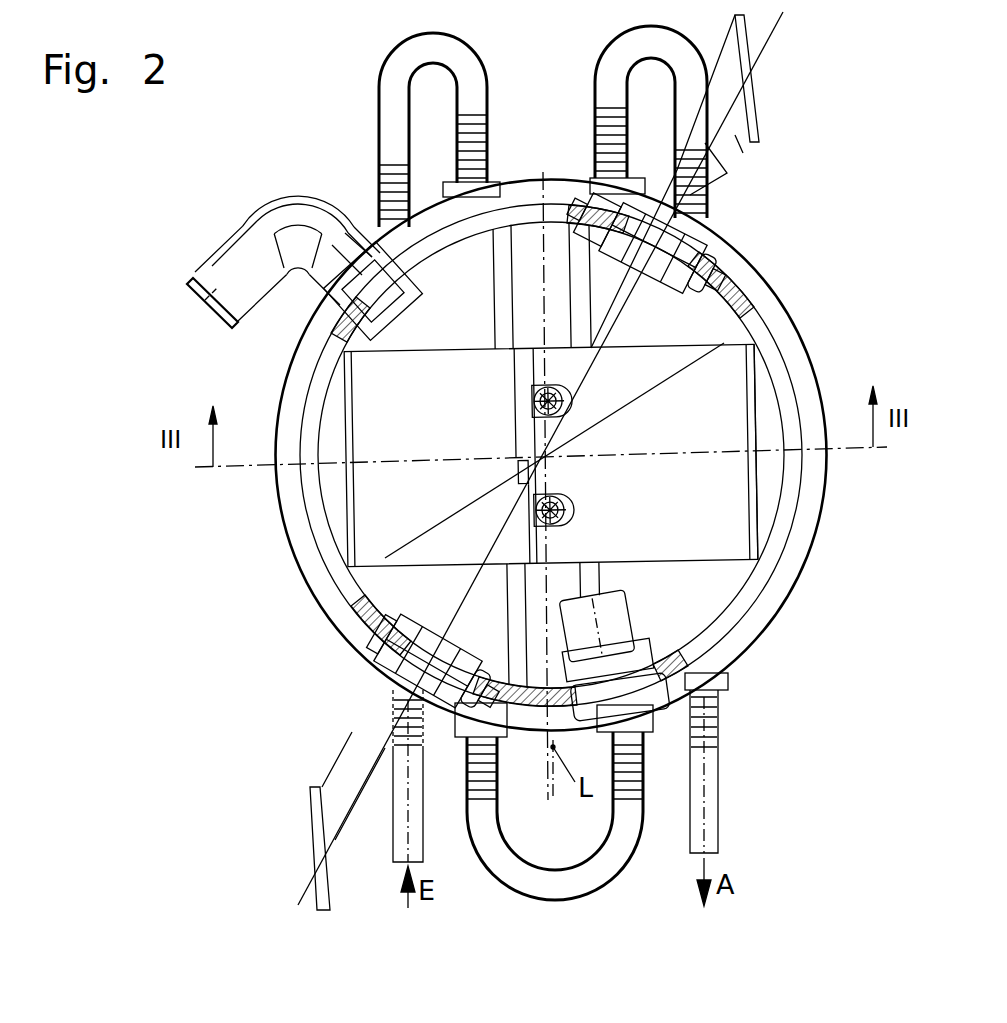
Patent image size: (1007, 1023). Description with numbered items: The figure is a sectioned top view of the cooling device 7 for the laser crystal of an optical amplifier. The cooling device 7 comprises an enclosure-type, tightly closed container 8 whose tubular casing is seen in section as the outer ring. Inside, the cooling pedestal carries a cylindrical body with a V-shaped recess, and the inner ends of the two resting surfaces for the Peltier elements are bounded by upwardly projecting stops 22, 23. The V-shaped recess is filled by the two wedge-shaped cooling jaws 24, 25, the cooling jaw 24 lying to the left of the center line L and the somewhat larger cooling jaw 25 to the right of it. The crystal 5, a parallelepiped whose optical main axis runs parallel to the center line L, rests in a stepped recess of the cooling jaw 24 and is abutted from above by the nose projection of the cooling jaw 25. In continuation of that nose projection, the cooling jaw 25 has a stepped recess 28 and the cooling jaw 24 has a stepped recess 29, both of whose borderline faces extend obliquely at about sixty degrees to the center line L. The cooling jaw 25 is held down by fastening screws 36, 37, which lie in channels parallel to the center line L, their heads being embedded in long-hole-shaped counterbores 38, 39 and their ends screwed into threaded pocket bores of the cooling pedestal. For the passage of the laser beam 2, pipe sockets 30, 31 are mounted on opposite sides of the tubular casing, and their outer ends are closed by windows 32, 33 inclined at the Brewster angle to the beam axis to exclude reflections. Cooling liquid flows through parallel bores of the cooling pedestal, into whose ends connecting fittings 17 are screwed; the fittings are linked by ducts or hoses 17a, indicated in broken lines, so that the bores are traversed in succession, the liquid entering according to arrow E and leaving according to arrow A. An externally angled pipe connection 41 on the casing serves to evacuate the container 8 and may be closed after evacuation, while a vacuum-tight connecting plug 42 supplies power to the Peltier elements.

The laser beam 2 is at (302, 892).
The crystal 5 is at (518, 477).
The cooling device 7 is at (348, 190).
The container 8 is at (278, 527).
The connecting fittings 17 is at (487, 147).
The ducts or hoses 17a is at (487, 80).
The stop 22 is at (505, 273).
The stop 23 is at (590, 310).
The cooling jaw 24 is at (400, 398).
The cooling jaw 25 is at (683, 515).
The stepped recess 28 is at (643, 380).
The stepped recess 29 is at (479, 561).
The pipe socket 30 is at (338, 787).
The pipe socket 31 is at (735, 135).
The window 32 is at (318, 826).
The window 33 is at (750, 97).
The fastening screw 36 is at (527, 398).
The fastening screw 37 is at (568, 517).
The counterbore 38 is at (570, 412).
The counterbore 39 is at (568, 512).
The pipe connection 41 is at (223, 262).
The connecting plug 42 is at (617, 630).